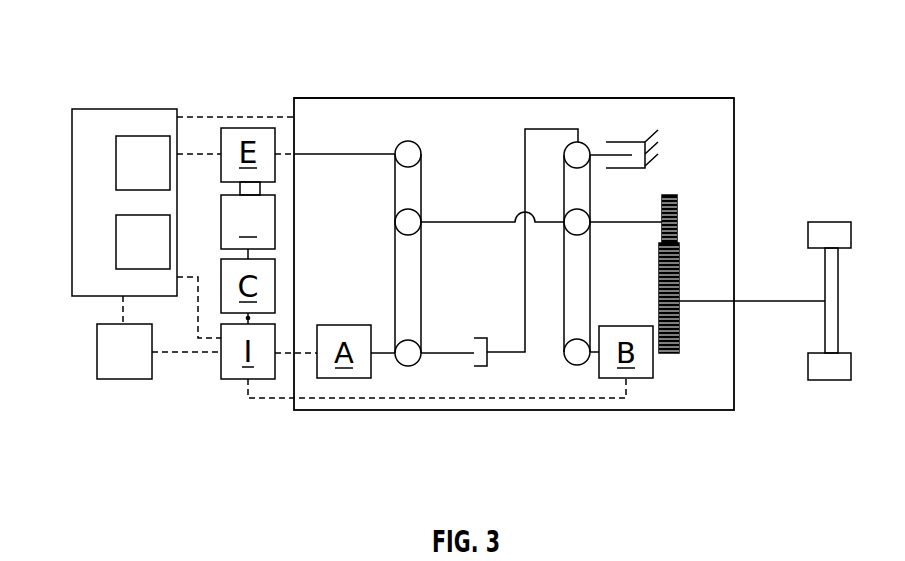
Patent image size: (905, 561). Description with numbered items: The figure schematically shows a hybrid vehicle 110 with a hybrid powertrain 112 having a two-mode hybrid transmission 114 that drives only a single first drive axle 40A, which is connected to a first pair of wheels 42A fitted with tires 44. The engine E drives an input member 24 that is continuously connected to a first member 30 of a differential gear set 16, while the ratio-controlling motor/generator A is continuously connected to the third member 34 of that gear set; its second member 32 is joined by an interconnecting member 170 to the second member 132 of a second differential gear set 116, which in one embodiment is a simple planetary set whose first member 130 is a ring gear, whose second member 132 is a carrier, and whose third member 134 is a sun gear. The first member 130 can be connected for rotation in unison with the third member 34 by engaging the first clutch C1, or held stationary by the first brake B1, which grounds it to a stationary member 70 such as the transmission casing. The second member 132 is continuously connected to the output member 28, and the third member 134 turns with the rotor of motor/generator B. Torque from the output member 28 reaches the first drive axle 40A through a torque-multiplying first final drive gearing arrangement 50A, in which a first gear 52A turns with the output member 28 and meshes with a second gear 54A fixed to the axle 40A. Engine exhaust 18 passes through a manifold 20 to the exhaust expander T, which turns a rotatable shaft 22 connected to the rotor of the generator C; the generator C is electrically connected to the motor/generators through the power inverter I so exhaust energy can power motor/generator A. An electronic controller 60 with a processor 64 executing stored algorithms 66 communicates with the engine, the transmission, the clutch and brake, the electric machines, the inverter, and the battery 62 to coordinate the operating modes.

The hybrid vehicle 110 is at (731, 51).
The hybrid powertrain 112 is at (359, 79).
The two-mode hybrid transmission 114 is at (387, 97).
The differential gear set 16 is at (400, 228).
The input member 24 is at (368, 157).
The first member 30 is at (402, 152).
The second member 32 is at (400, 224).
The third member 34 is at (409, 358).
The interconnecting member 170 is at (493, 219).
The first clutch C1 is at (446, 332).
The second differential gear set 116 is at (542, 356).
The first member 130 is at (575, 142).
The second member 132 is at (580, 226).
The third member 134 is at (578, 357).
The first brake B1 is at (615, 137).
The stationary member 70 is at (652, 160).
The output member 28 is at (647, 220).
The first final drive gearing arrangement 50A is at (722, 276).
The first gear 52A is at (677, 222).
The second gear 54A is at (678, 313).
The first drive axle 40A is at (755, 300).
The tires 44 is at (830, 222).
The first pair of wheels 42A is at (838, 282).
The electronic controller 60 is at (83, 213).
The processor 64 is at (133, 172).
The stored algorithms 66 is at (133, 252).
The battery 62 is at (114, 363).
The engine exhaust 18 is at (224, 206).
The manifold 20 is at (240, 188).
The rotatable shaft 22 is at (247, 251).